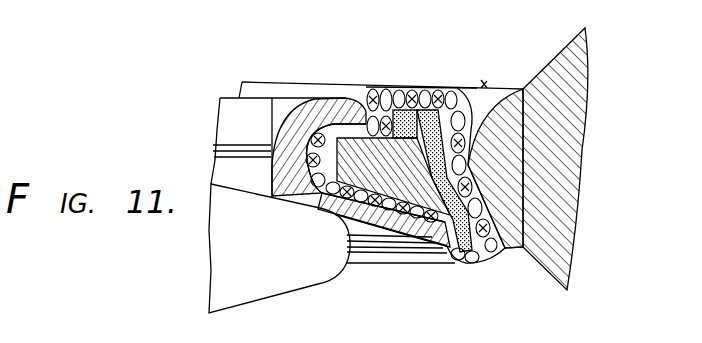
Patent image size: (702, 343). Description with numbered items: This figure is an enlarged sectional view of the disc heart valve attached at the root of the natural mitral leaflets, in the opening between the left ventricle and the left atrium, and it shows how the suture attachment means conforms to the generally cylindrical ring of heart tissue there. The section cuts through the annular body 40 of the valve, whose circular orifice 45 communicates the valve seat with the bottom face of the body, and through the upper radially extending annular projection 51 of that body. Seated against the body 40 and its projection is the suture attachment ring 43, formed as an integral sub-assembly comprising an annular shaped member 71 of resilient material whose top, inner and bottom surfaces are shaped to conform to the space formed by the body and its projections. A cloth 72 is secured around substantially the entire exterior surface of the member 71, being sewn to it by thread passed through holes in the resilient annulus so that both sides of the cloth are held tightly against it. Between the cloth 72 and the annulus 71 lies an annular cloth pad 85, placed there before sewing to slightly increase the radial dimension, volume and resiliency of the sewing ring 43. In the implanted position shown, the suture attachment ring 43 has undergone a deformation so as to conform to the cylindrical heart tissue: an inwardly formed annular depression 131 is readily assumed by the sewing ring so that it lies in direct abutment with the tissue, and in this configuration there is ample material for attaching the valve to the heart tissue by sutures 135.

The annular body 40 is at (276, 124).
The orifice 45 is at (258, 190).
The upper radially extending annular projection 51 is at (421, 262).
The annular shaped member 71 is at (413, 88).
The suture attachment ring 43 is at (457, 86).
The sutures 135 is at (495, 88).
The inwardly formed annular depression 131 is at (470, 168).
The annular cloth pad 85 is at (461, 263).
The cloth 72 is at (486, 259).